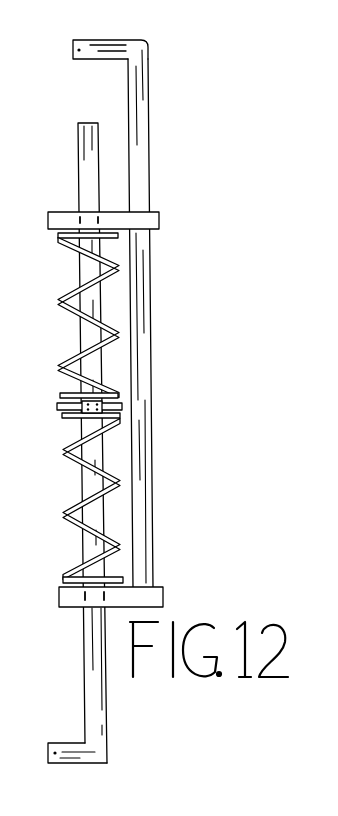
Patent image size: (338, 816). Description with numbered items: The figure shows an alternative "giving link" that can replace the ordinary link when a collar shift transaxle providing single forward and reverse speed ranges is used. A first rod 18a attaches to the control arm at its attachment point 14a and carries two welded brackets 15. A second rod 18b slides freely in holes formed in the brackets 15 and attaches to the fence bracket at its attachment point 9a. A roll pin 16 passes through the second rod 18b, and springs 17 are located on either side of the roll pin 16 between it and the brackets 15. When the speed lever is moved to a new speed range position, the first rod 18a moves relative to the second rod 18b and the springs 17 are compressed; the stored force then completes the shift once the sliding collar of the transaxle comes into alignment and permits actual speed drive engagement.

The attachment point on arm 14a is at (87, 60).
The first rod 18a is at (140, 163).
The second rod 18b is at (85, 179).
The attachment point on fence bracket 9a is at (56, 743).
The welded brackets 15 is at (148, 223).
The roll pin 16 is at (53, 410).
The springs 17 is at (67, 313).